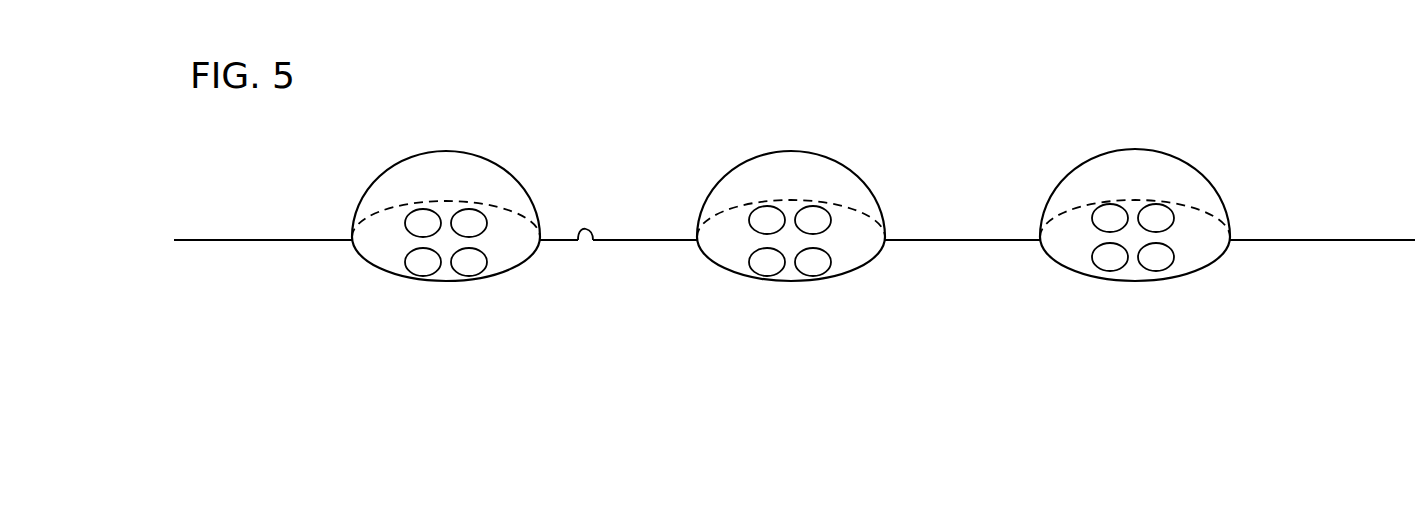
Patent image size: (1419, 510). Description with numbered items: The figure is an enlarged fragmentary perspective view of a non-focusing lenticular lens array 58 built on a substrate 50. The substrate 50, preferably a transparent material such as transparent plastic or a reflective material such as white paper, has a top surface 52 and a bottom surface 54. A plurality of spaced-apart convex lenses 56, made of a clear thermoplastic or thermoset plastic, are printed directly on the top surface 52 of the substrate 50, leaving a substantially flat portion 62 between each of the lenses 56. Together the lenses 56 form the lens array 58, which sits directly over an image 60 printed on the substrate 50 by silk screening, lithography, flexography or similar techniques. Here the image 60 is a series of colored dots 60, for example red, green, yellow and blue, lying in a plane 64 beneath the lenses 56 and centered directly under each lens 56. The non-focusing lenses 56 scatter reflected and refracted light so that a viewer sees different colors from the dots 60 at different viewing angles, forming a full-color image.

The substrate 50 is at (1308, 239).
The top surface 52 is at (577, 244).
The bottom surface 54 is at (666, 244).
The convex lens 56 is at (446, 151).
The non-focusing lenticular lens array 58 is at (967, 84).
The image 60 is at (808, 248).
The flat portion 62 is at (618, 240).
The plane 64 is at (172, 243).